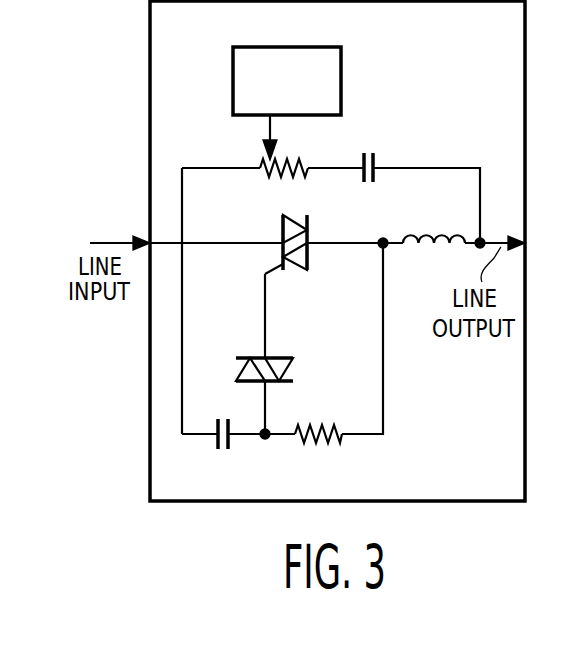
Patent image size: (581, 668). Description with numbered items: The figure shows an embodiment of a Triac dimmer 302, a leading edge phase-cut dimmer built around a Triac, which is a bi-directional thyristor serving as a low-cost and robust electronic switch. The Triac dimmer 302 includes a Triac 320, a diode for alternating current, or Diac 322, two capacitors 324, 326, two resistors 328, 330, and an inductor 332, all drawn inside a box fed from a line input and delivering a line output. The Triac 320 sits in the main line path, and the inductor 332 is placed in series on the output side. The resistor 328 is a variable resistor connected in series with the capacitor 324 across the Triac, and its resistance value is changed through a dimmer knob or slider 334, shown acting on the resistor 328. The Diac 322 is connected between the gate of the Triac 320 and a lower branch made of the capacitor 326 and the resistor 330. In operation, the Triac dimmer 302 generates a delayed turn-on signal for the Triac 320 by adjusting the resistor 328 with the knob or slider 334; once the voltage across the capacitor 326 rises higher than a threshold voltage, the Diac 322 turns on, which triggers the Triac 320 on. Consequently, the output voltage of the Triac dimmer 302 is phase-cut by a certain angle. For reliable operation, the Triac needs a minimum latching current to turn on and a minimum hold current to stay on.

The Triac dimmer 302 is at (150, 48).
The Triac 320 is at (282, 229).
The diode for alternating current (Diac) 322 is at (248, 357).
The capacitor 324 is at (378, 160).
The capacitor 326 is at (231, 447).
The resistor 328 is at (262, 160).
The resistor 330 is at (342, 440).
The inductor 332 is at (430, 234).
The dimmer knob or slider 334 is at (341, 80).